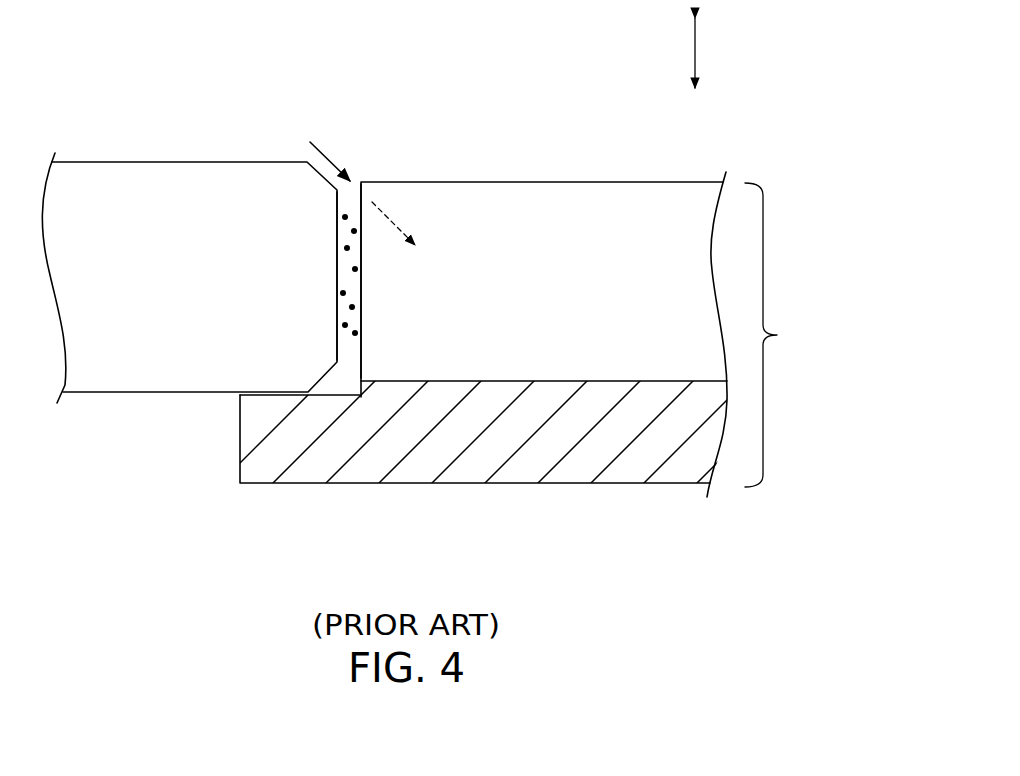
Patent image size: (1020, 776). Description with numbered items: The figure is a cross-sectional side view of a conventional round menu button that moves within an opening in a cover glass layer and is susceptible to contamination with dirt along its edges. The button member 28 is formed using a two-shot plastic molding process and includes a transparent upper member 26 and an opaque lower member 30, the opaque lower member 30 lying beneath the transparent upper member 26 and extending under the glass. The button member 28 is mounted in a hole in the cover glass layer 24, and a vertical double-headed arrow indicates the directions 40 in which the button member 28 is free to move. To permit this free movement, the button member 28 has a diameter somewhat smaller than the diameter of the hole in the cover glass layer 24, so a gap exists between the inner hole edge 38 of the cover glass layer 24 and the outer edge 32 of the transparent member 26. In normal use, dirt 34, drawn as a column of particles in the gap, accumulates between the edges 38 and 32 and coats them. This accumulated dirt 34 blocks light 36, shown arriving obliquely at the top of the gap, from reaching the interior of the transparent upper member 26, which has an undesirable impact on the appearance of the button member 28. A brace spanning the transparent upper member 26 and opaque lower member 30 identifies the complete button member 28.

The cover glass layer 24 is at (162, 173).
The transparent upper member 26 is at (542, 195).
The button member 28 is at (778, 335).
The opaque lower member 30 is at (485, 463).
The outer edge of transparent member 32 is at (362, 353).
The dirt 34 is at (353, 269).
The light 36 is at (328, 160).
The inner hole edge 38 is at (337, 339).
The directions 40 is at (697, 48).